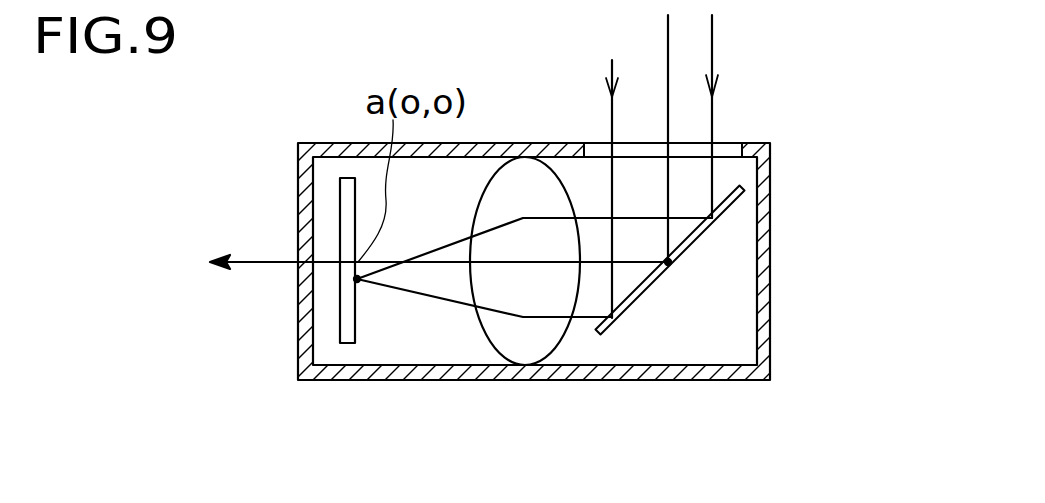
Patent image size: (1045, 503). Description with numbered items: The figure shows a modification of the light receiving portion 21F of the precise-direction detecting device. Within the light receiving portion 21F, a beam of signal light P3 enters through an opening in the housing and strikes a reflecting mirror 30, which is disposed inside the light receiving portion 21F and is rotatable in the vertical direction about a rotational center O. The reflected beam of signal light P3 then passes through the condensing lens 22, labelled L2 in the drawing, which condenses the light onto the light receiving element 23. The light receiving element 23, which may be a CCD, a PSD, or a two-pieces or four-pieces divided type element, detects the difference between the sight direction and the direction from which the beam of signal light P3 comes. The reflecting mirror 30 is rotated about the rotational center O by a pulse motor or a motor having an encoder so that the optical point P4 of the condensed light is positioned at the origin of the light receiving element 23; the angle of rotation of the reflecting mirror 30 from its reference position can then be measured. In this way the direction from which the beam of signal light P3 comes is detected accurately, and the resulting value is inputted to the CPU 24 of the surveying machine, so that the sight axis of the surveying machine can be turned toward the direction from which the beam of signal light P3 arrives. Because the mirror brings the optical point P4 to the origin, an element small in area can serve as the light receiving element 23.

The light receiving portion 21F is at (568, 382).
The condensing lens 22 is at (536, 183).
The light receiving element 23 is at (340, 205).
The CPU 24 is at (212, 300).
The reflecting mirror 30 is at (690, 252).
The rotational center O is at (672, 268).
The beam of signal light P3 is at (712, 42).
The optical point P4 is at (357, 280).
The lens L2 is at (523, 265).